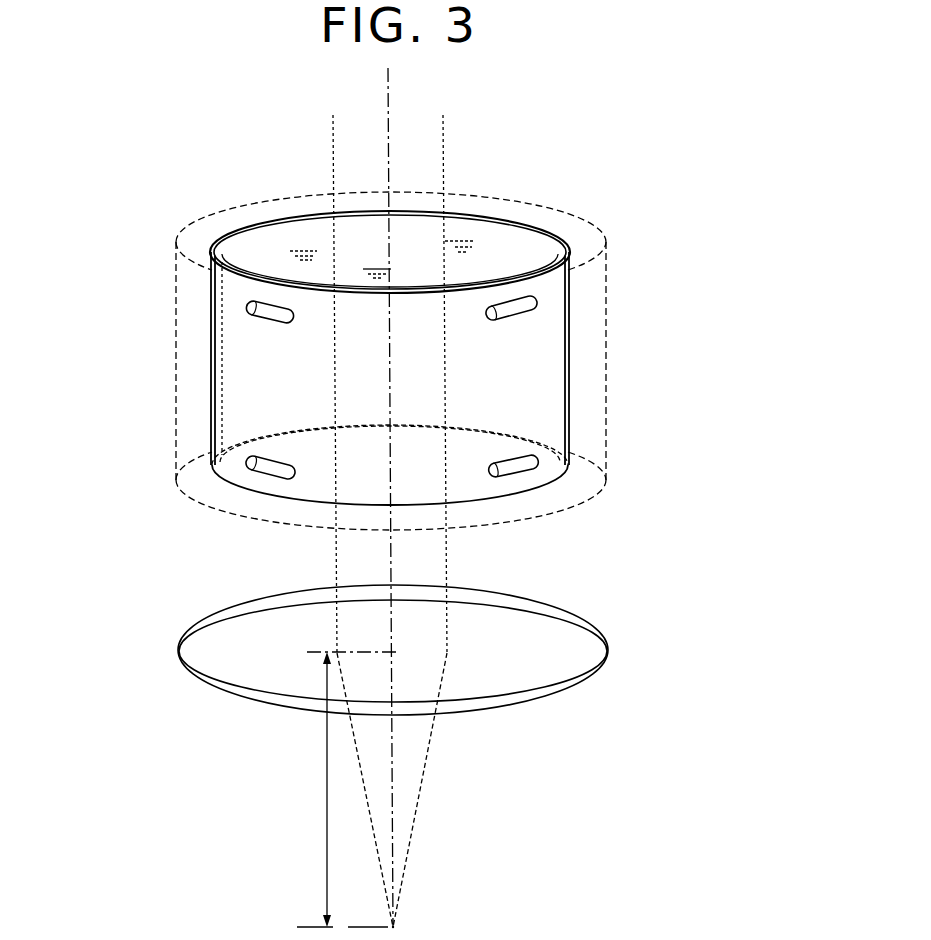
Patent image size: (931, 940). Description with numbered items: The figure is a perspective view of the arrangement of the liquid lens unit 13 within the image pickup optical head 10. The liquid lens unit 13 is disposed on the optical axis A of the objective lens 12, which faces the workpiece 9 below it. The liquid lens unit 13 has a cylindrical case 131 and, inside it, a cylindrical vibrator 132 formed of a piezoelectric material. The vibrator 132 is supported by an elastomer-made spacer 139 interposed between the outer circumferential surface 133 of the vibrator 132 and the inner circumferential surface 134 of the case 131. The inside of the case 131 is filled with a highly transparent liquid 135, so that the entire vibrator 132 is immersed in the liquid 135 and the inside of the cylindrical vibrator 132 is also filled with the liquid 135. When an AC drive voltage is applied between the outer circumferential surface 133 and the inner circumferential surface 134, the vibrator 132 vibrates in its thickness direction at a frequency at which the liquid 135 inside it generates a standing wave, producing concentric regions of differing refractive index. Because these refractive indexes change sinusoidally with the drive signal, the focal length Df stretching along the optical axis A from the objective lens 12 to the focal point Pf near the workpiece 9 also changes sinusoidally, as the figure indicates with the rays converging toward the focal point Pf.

The image pickup optical head 10 is at (702, 116).
The liquid lens unit 13 is at (158, 227).
The cylindrical case 131 is at (177, 323).
The cylindrical vibrator 132 is at (210, 390).
The outer circumferential surface 133 is at (557, 242).
The inner circumferential surface 134 is at (512, 257).
The liquid 135 is at (453, 238).
The spacer 139 is at (265, 460).
The objective lens 12 is at (168, 632).
The workpiece 9 is at (305, 926).
The optical axis A is at (387, 116).
The focal length Df is at (347, 789).
The focal point Pf is at (396, 927).